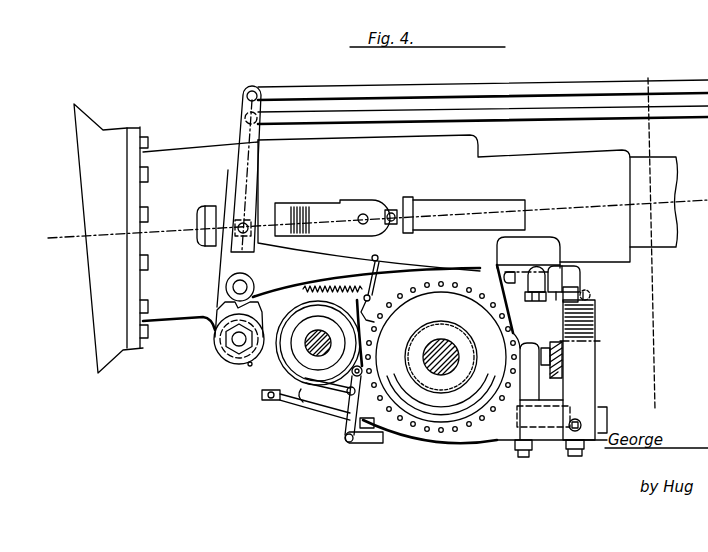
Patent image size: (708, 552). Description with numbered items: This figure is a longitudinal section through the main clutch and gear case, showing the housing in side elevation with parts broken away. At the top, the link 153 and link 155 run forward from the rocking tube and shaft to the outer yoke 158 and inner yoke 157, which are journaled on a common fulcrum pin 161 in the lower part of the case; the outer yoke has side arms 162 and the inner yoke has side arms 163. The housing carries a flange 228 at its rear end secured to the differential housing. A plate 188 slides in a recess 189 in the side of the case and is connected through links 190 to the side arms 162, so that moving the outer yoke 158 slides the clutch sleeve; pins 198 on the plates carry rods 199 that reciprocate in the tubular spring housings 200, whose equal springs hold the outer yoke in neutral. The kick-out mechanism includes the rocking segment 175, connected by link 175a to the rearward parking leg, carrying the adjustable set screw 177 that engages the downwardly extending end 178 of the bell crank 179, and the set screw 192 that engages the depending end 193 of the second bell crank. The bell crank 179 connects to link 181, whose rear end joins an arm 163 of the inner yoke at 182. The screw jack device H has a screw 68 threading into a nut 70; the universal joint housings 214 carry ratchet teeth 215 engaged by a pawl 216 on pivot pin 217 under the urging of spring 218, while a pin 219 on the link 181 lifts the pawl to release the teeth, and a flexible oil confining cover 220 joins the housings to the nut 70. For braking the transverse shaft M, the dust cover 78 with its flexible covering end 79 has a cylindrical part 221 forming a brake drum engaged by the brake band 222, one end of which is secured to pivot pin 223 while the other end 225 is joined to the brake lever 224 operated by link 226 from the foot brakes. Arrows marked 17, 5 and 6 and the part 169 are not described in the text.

The link 153 is at (543, 87).
The link 155 is at (663, 116).
The section line 5- 5 is at (670, 70).
The section line 6- 6 is at (46, 232).
The flange 228 is at (129, 129).
The outer yoke 158 is at (249, 107).
The inner yoke 157 is at (236, 132).
The side arms of outer yoke 162 is at (246, 165).
The side arms of inner yoke 163 is at (242, 186).
The direction arrow 17 is at (249, 189).
The block 169 is at (215, 243).
The connection of link 181 to yoke arm 182 is at (226, 290).
The common fulcrum pin 161 is at (232, 343).
The cylindrical part of dust cover 221 is at (248, 366).
The transverse shaft M is at (316, 347).
The dust cover 78 is at (296, 322).
The flexible covering end 79 is at (297, 366).
The brake band 222 is at (327, 392).
The pivot pin 223 is at (325, 406).
The other end of brake band 225 is at (348, 412).
The brake lever 224 is at (349, 430).
The link 226 is at (366, 446).
The links 190 is at (284, 232).
The spring 218 is at (332, 299).
The pawl 216 is at (377, 300).
The pin 219 is at (380, 259).
The screw 68 is at (443, 353).
The pivot pin 217 is at (441, 347).
The nut 70 is at (436, 386).
The ratchet teeth 215 is at (443, 437).
The universal joint housings 214 is at (463, 441).
The flexible oil confining cover 220 is at (471, 394).
The tubular spring housings 200 is at (471, 196).
The rods 199 is at (412, 205).
The recess 189 is at (305, 206).
The plate 188 is at (360, 203).
The pins 198 is at (396, 210).
The link 181 is at (518, 248).
The downwardly extending end of bell crank 178 is at (585, 290).
The bell crank 179 is at (552, 270).
The adjustable set screw 177 is at (591, 297).
The downwardly depending end of bell crank 193 is at (568, 293).
The screw jack device H is at (502, 338).
The link 175a is at (562, 357).
The rocking segment 175 is at (585, 377).
The set screw 192 is at (582, 420).